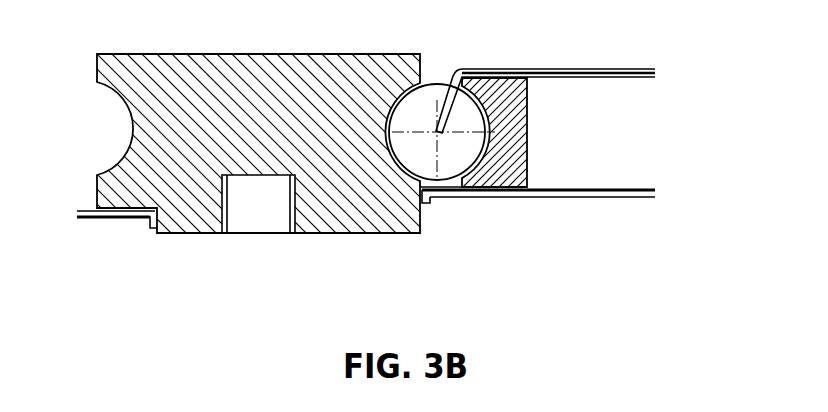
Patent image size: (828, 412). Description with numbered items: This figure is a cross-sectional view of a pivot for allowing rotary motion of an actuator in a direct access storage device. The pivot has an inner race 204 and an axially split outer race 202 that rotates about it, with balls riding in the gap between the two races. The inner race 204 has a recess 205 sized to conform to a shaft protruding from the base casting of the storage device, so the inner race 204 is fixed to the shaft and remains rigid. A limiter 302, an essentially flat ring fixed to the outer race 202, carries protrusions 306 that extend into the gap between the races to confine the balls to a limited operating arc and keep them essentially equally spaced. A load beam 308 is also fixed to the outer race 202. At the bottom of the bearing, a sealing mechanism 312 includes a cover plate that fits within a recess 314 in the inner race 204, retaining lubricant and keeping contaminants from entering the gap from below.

The outer race 202 is at (527, 150).
The inner race 204 is at (183, 234).
The recess 205 is at (263, 218).
The limiter 302 is at (547, 69).
The protrusions 306 is at (436, 131).
The load beam 308 is at (647, 78).
The sealing mechanism 312 is at (102, 219).
The recess 314 is at (413, 235).